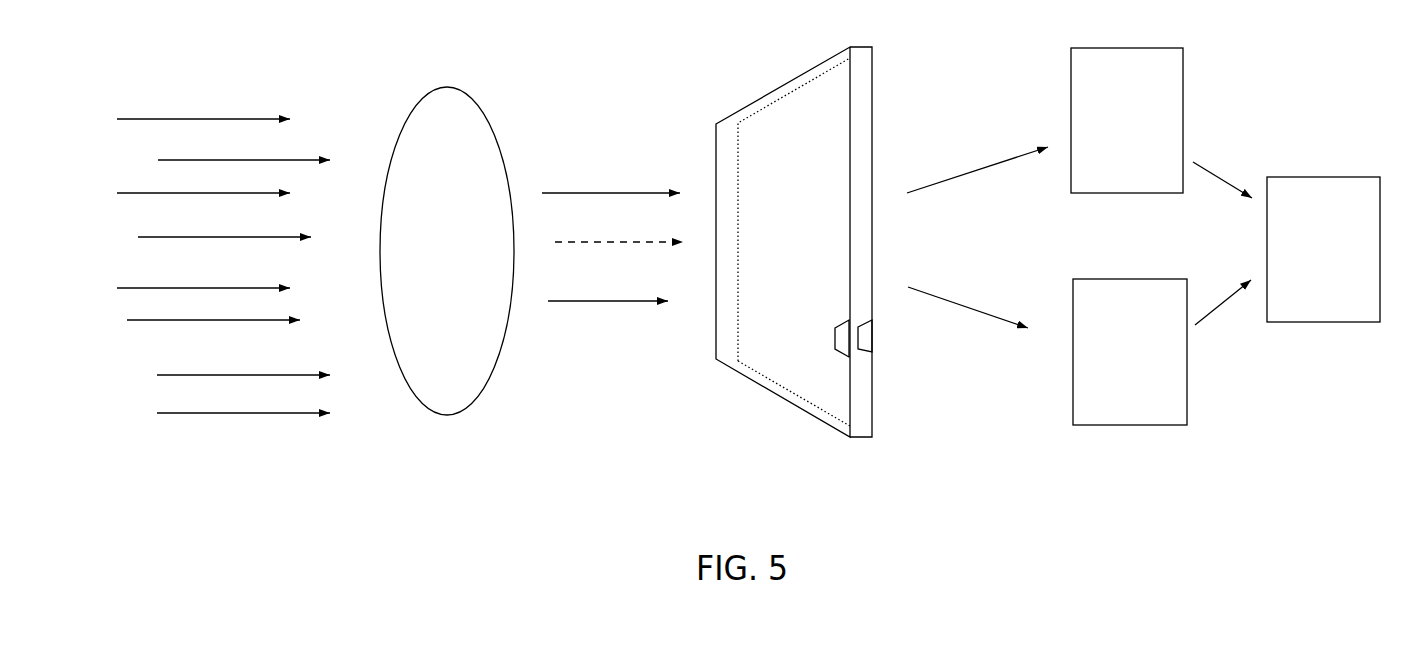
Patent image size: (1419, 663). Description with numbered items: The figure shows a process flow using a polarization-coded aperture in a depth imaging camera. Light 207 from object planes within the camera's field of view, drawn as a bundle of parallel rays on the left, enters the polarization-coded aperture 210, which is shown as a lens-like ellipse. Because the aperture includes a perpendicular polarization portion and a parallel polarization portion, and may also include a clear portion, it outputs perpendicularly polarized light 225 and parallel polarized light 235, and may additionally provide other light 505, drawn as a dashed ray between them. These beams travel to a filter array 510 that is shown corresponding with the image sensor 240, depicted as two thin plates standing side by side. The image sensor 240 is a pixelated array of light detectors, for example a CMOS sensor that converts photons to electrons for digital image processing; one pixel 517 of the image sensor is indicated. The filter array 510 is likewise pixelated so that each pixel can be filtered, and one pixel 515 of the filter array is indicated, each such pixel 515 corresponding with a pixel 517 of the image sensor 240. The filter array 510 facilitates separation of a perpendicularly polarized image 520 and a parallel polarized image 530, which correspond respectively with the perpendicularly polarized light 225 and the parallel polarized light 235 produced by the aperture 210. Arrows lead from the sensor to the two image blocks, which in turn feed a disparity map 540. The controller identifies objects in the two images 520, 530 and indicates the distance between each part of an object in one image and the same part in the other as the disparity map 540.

The light 207 is at (188, 105).
The polarization-coded aperture 210 is at (441, 86).
The perpendicularly polarized light 225 is at (575, 192).
The other light 505 is at (578, 243).
The parallel polarized light 235 is at (587, 302).
The filter array 510 is at (737, 112).
The image sensor 240 is at (873, 112).
The pixel of the filter array 515 is at (834, 338).
The pixel of the image sensor 517 is at (863, 337).
The perpendicularly polarized image 520 is at (1148, 138).
The parallel polarized image 530 is at (1150, 358).
The disparity map 540 is at (1345, 254).